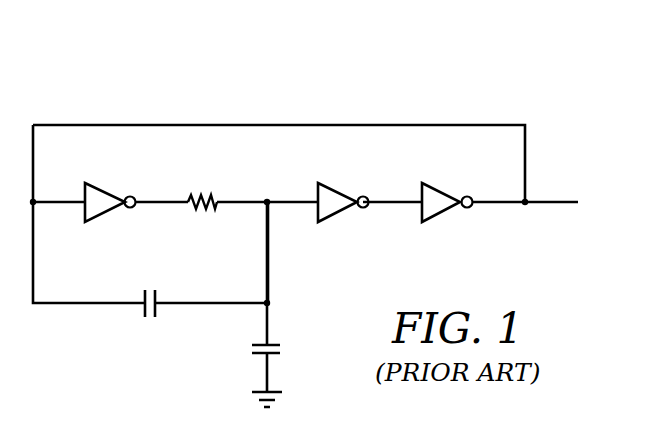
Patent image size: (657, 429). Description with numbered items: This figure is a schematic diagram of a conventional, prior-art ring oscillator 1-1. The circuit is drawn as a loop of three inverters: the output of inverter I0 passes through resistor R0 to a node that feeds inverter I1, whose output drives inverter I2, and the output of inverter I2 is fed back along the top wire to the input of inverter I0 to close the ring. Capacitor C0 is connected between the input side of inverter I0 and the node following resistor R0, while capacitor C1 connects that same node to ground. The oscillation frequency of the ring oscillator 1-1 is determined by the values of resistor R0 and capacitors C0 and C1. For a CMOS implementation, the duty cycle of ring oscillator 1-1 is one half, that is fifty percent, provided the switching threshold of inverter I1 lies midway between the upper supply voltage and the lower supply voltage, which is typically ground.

The ring oscillator 1-1 is at (362, 80).
The inverter I0 is at (110, 193).
The resistor R0 is at (202, 186).
The inverter I1 is at (343, 193).
The inverter I2 is at (447, 193).
The capacitor C0 is at (149, 291).
The capacitor C1 is at (282, 352).